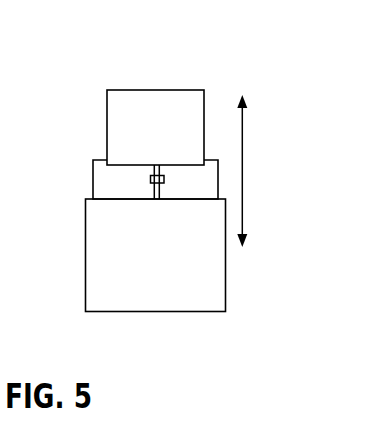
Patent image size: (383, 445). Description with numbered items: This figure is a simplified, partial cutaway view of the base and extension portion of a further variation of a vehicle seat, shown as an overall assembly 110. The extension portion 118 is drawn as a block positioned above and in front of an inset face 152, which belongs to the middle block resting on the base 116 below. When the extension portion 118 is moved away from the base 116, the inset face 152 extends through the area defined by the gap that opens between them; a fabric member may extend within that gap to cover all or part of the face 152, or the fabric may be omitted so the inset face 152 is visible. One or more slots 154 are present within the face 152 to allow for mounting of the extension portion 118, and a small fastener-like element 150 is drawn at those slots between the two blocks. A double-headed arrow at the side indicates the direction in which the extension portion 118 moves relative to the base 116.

The assembly 110 is at (179, 68).
The extension portion 118 is at (144, 108).
The inset face 152 is at (101, 163).
The slots 154 is at (152, 168).
The fastener 150 is at (150, 180).
The base 116 is at (137, 270).